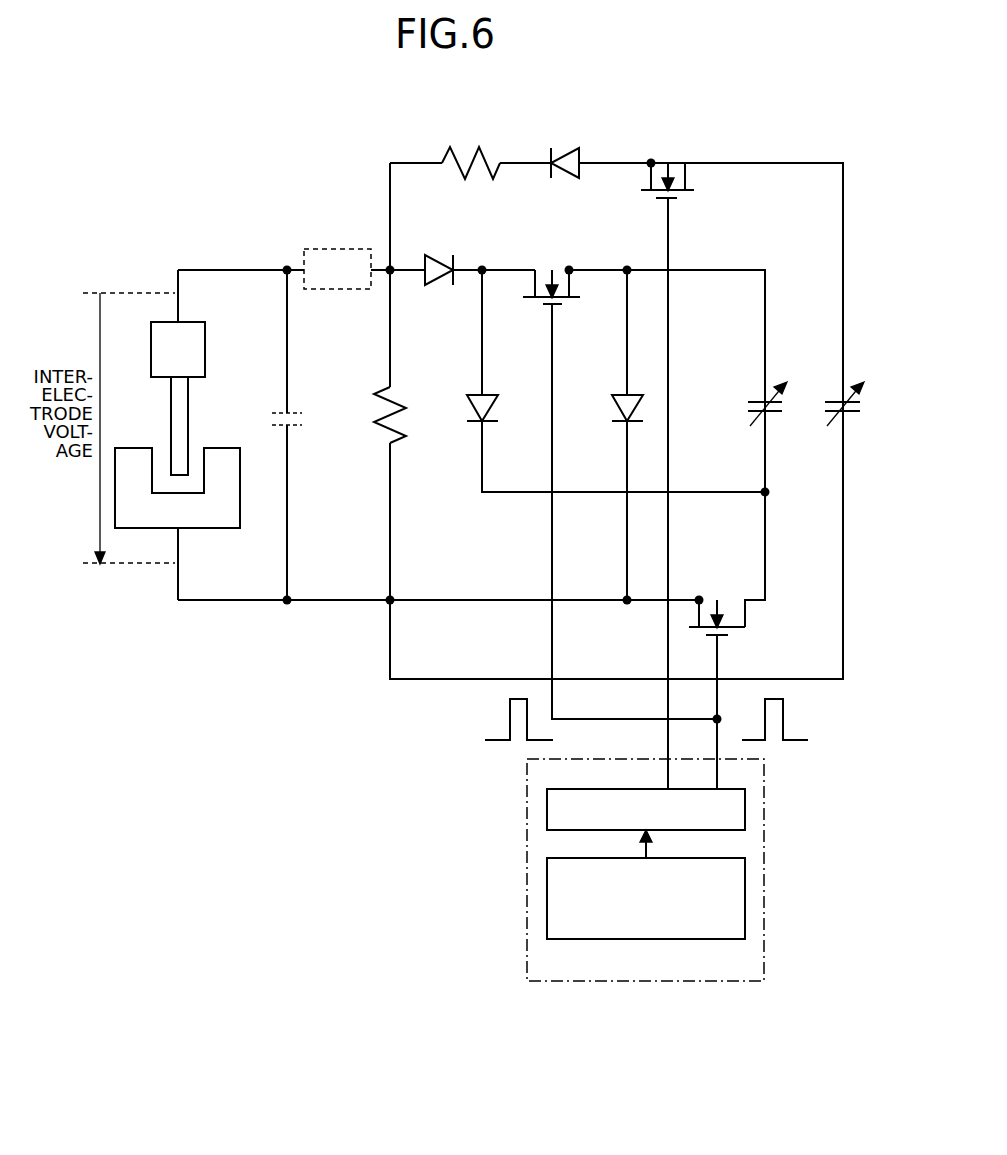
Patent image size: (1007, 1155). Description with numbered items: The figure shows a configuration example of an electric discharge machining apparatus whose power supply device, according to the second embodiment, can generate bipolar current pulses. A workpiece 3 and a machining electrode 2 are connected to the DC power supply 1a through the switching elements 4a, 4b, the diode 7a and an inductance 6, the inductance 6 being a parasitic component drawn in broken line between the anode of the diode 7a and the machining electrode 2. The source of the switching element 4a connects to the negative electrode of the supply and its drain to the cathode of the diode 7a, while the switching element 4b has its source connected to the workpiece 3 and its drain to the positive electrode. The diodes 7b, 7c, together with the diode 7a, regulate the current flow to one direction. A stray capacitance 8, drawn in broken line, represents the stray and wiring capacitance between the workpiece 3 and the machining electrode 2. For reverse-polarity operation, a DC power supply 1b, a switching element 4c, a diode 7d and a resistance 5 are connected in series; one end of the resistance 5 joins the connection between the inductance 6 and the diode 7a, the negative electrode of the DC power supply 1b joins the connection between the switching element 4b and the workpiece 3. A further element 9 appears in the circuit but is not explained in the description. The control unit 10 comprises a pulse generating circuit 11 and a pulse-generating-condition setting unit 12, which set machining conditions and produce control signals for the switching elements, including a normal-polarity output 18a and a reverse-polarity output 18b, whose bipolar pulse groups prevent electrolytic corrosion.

The DC power supply 1a is at (762, 398).
The DC power supply 1b is at (840, 398).
The machining electrode 2 is at (192, 320).
The workpiece 3 is at (213, 530).
The switching element 4a is at (560, 306).
The switching element 4b is at (725, 622).
The switching element 4c is at (672, 158).
The resistance 5 is at (446, 156).
The inductance 6 is at (341, 247).
The diode 7a is at (437, 286).
The diode 7b is at (491, 393).
The diode 7c is at (615, 393).
The diode 7d is at (571, 153).
The stray capacitance 8 is at (296, 412).
The resistor 9 is at (386, 441).
The control unit 10 is at (524, 796).
The pulse generating circuit 11 is at (745, 808).
The pulse-generating-condition setting unit 12 is at (745, 900).
The pulse-generating circuit output 18a is at (506, 719).
The pulse-generating circuit output 18b is at (786, 720).